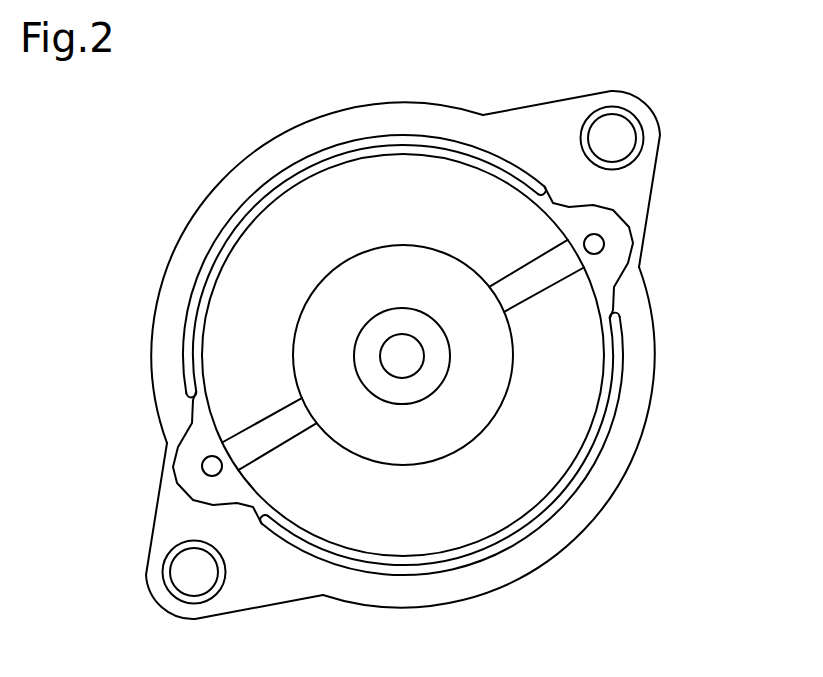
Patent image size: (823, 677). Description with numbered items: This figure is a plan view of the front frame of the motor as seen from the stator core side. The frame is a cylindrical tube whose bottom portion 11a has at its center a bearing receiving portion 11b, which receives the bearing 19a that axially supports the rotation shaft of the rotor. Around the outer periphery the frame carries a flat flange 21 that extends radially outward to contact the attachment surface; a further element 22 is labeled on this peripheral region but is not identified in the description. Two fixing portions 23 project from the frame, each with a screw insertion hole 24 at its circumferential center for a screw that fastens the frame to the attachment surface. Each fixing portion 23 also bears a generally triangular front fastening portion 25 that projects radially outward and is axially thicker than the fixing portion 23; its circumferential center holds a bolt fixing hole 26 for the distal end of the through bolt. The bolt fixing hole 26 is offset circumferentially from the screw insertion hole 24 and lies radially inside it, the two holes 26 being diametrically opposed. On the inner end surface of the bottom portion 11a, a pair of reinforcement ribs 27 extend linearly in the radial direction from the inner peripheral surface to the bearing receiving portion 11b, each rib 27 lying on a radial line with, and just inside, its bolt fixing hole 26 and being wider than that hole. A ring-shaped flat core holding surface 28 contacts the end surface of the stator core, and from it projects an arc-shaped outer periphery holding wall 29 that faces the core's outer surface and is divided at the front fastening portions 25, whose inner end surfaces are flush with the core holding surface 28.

The bottom portion 11a is at (333, 193).
The bearing receiving portion 11b is at (406, 245).
The bearing 19a is at (400, 385).
The flange 21 is at (657, 323).
The housing peripheral wall 22 is at (628, 390).
The fixing portion 23 is at (633, 186).
The screw insertion hole 24 is at (623, 142).
The front fastening portion 25 is at (608, 227).
The bolt fixing hole 26 is at (605, 243).
The reinforcement rib 27 is at (538, 288).
The core holding surface 28 is at (248, 220).
The outer periphery holding wall 29 is at (262, 183).